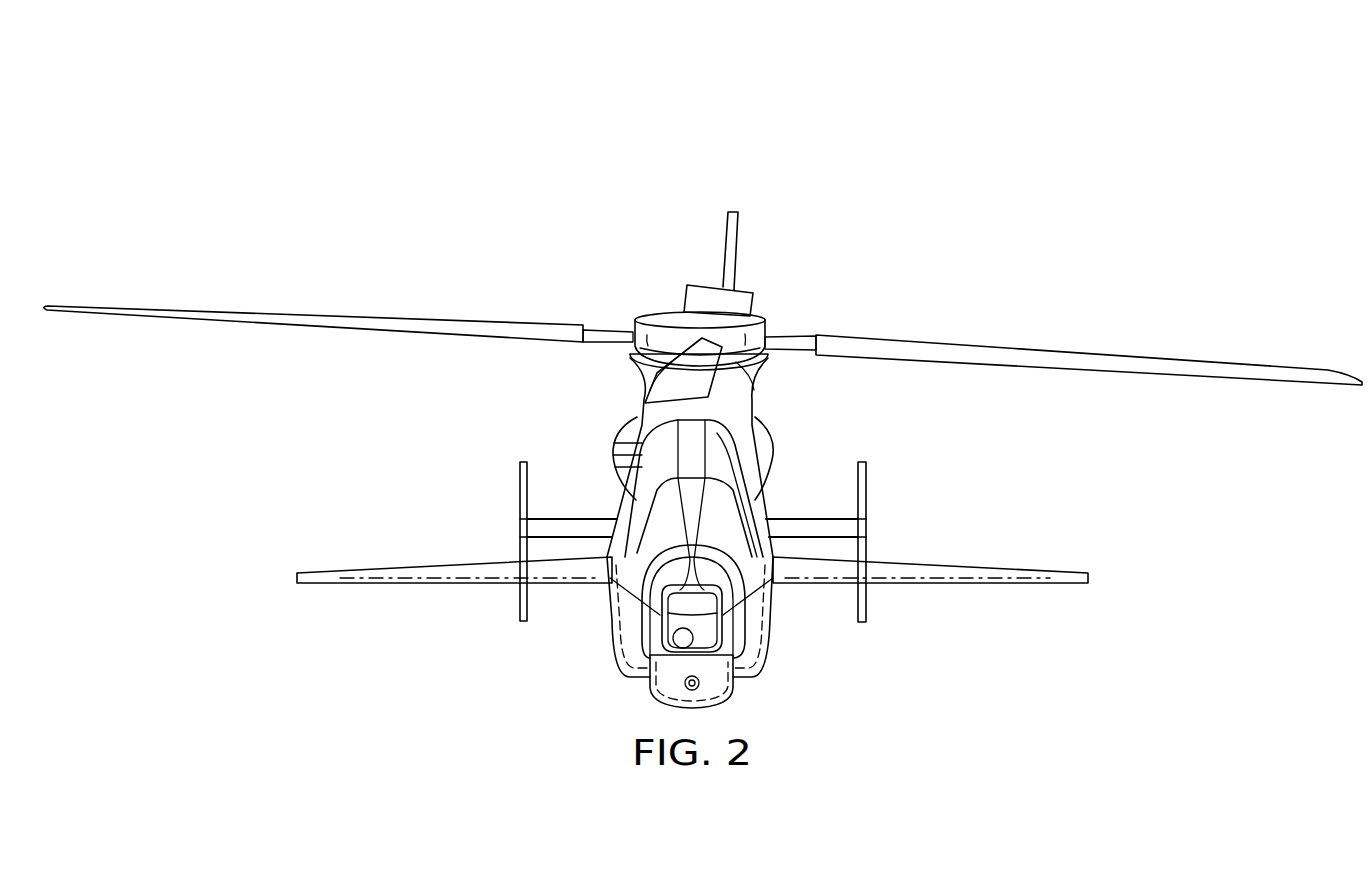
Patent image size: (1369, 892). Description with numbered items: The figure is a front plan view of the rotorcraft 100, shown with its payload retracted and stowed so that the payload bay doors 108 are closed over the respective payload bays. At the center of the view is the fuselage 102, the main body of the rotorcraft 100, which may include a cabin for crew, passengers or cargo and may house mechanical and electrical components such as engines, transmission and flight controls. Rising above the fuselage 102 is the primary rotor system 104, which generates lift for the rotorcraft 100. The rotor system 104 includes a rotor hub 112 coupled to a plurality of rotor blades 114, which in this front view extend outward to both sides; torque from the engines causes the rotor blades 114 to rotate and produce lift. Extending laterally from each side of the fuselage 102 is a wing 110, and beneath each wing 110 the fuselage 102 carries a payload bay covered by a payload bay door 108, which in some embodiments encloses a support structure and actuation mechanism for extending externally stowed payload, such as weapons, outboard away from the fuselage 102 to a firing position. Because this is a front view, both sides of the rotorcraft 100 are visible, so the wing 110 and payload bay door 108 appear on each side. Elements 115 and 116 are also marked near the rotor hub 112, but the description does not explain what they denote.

The rotorcraft 100 is at (320, 163).
The fuselage 102 is at (628, 440).
The primary rotor system 104 is at (770, 229).
The payload bay door 108 is at (598, 638).
The wing 110 is at (403, 560).
The rotor hub 112 is at (772, 326).
The rotor blades 114 is at (331, 316).
The blade root 115 is at (612, 327).
The hub fairing 116 is at (656, 312).